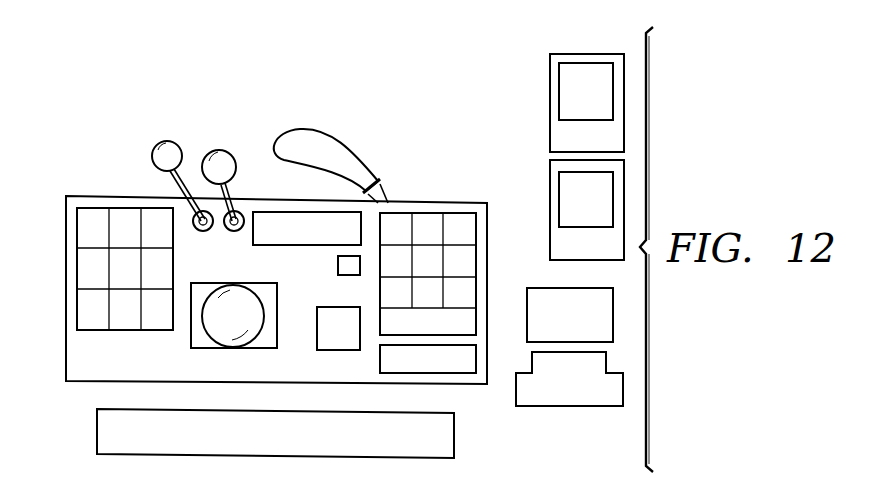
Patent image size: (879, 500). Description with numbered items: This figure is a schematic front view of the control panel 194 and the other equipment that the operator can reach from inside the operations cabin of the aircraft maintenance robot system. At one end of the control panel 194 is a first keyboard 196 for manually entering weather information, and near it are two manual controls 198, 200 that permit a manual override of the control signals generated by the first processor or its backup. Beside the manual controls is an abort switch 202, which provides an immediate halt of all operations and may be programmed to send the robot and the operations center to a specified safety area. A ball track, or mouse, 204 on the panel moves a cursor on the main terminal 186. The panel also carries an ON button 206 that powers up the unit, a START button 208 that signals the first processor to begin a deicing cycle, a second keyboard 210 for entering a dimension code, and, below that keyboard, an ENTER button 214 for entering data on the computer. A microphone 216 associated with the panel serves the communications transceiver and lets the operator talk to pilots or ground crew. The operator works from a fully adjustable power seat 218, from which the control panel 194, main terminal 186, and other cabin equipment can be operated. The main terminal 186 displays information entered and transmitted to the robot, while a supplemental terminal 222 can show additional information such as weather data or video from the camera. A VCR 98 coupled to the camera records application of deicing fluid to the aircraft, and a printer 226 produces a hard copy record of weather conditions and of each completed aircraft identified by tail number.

The control panel 194 is at (68, 143).
The first keyboard 196 is at (173, 270).
The manual control 198 is at (160, 144).
The manual control 200 is at (224, 150).
The abort switch 202 is at (263, 210).
The ball track 204 is at (191, 338).
The ON button 206 is at (338, 266).
The START button 208 is at (317, 329).
The second keyboard 210 is at (418, 212).
The ENTER button 214 is at (474, 372).
The microphone 216 is at (349, 151).
The power seat 218 is at (97, 430).
The main terminal 186 is at (550, 104).
The supplemental terminal 222 is at (550, 177).
The VCR 98 is at (533, 288).
The printer 226 is at (588, 408).